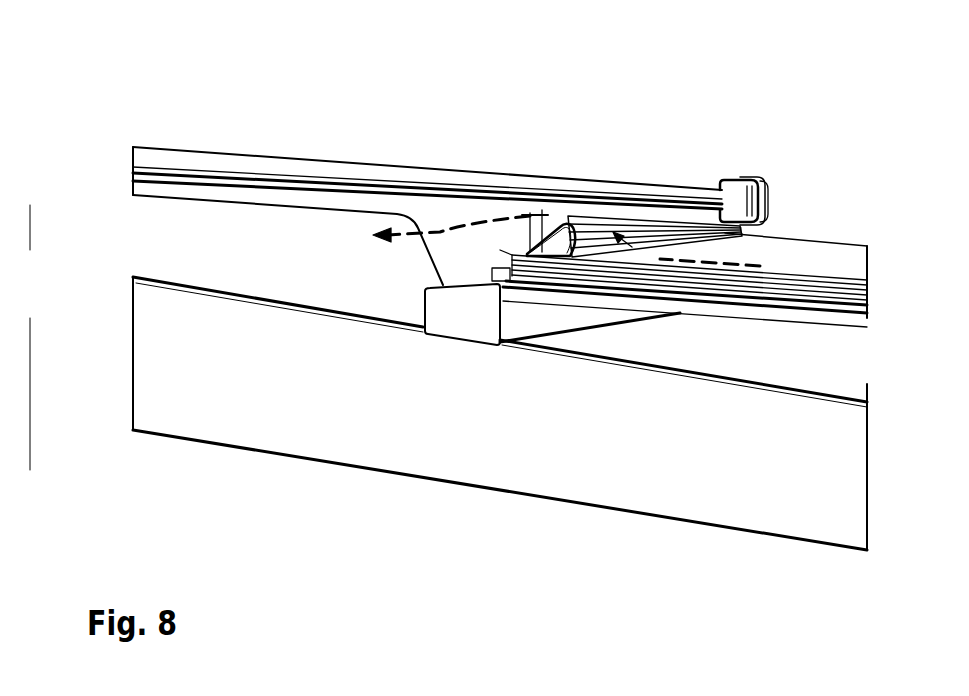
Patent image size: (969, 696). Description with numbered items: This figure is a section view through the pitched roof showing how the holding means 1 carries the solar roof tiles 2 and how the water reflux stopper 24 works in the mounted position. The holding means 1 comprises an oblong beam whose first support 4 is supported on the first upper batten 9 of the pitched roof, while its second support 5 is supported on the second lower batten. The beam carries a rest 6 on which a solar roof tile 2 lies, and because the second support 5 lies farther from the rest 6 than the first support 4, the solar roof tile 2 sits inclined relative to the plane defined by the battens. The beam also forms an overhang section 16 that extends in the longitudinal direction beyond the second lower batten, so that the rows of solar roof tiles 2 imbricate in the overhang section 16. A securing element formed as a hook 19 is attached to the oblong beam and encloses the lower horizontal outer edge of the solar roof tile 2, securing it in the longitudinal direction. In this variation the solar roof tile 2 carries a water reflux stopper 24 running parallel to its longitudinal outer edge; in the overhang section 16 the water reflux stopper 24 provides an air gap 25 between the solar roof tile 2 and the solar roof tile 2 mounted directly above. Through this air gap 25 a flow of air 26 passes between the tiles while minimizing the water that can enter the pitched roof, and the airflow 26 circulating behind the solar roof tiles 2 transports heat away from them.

The holding means 1 is at (195, 190).
The solar roof tile 2 is at (245, 165).
The first support 4 is at (500, 286).
The second support 5 is at (460, 268).
The rest 6 is at (770, 311).
The first upper batten 9 is at (468, 292).
The overhang section 16 is at (707, 216).
The hook 19 is at (762, 177).
The water reflux stopper 24 is at (561, 213).
The air gap 25 is at (575, 212).
The flow of air 26 is at (470, 225).